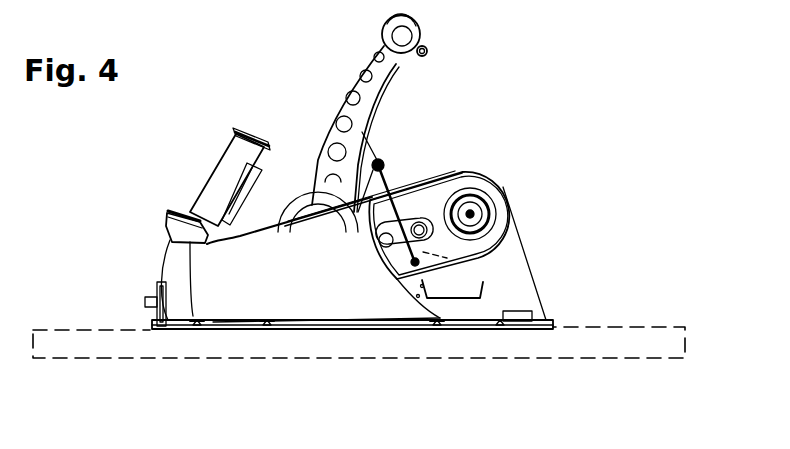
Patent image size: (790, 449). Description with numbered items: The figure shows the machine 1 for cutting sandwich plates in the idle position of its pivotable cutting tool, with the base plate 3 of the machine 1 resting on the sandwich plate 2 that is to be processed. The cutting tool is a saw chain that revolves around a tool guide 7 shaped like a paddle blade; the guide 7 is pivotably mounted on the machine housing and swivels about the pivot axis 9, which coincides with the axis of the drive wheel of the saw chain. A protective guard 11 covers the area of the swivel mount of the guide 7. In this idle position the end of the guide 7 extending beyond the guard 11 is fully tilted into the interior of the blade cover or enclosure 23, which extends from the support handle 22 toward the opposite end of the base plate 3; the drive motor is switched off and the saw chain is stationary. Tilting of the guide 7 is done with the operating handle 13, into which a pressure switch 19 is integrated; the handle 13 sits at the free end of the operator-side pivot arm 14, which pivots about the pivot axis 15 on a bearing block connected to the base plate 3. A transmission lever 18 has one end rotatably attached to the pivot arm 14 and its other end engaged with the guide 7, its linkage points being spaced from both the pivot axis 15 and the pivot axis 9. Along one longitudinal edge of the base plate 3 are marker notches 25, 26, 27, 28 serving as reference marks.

The machine 1 is at (287, 117).
The sandwich plate 2 is at (77, 343).
The base plate 3 is at (203, 314).
The tool guide 7 is at (482, 263).
The pivot axis 9 is at (472, 212).
The guard 11 is at (500, 241).
The handle 13 is at (403, 32).
The pivot arm 14 is at (363, 89).
The pivot axis 15 is at (333, 236).
The transmission lever 18 is at (372, 196).
The pressure switch 19 is at (428, 53).
The support handle 22 is at (203, 182).
The enclosure 23 is at (302, 287).
The marker notch 25 is at (503, 323).
The marker notch 26 is at (437, 323).
The marker notch 27 is at (268, 323).
The marker notch 28 is at (195, 326).